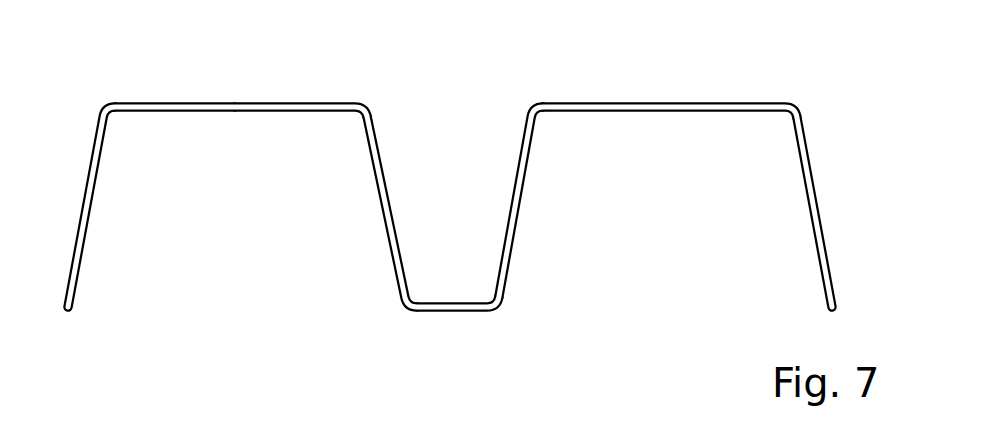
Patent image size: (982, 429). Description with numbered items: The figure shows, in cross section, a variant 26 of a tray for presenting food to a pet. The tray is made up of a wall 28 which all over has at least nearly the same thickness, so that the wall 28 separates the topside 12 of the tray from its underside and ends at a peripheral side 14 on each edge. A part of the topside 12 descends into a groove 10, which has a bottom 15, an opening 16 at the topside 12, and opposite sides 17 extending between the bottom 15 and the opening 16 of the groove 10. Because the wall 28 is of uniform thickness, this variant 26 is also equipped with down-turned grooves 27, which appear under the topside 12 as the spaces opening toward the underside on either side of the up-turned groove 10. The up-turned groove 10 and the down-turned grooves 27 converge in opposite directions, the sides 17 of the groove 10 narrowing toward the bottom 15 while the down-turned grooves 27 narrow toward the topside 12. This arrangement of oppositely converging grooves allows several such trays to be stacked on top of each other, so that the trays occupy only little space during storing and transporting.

The groove 10 is at (469, 154).
The topside 12 is at (312, 103).
The peripheral side 14 is at (808, 149).
The bottom 15 is at (422, 302).
The opening 16 is at (462, 102).
The opposite sides 17 is at (380, 136).
The variant 26 is at (691, 78).
The down-turned grooves 27 is at (234, 250).
The wall 28 is at (198, 103).